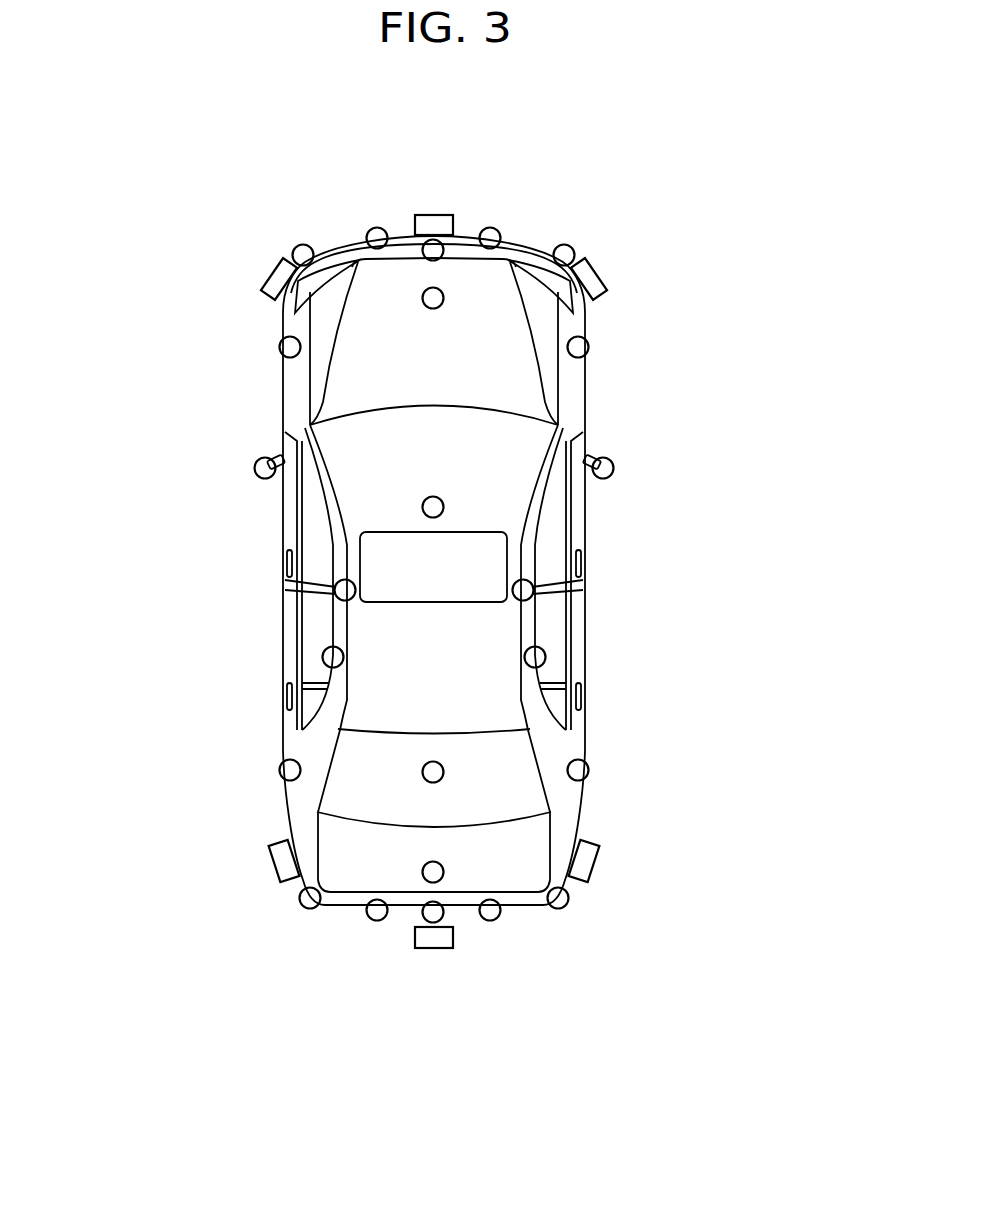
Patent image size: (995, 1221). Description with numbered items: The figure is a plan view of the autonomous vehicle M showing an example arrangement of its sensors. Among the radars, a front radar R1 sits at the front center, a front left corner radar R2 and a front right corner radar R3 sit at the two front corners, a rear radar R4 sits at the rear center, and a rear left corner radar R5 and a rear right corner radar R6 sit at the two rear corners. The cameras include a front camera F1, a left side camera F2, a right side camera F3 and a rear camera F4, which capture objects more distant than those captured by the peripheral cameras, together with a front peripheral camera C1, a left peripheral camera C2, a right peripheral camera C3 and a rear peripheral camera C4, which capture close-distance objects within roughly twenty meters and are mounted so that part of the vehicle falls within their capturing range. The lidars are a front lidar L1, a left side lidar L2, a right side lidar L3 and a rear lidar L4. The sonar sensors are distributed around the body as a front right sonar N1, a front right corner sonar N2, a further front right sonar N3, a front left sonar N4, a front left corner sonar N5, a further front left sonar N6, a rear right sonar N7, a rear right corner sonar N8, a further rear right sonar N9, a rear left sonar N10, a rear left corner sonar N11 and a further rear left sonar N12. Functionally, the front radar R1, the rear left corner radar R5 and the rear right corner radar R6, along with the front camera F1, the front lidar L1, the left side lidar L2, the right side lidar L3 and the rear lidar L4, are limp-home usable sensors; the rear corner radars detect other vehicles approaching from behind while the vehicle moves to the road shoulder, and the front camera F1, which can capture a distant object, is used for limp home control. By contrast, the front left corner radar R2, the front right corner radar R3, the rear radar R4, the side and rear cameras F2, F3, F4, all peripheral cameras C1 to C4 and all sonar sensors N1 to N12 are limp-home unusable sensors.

The autonomous vehicle M is at (283, 403).
The front radar R1 is at (428, 215).
The front peripheral camera C1 is at (447, 247).
The front left sonar N4 is at (370, 228).
The front right sonar N1 is at (528, 200).
The front left corner sonar N5 is at (295, 247).
The front right corner sonar N2 is at (573, 247).
The front left corner radar R2 is at (266, 287).
The front right corner radar R3 is at (602, 285).
The front left sonar N6 is at (279, 347).
The front right sonar N3 is at (589, 347).
The front lidar L1 is at (433, 309).
The front camera F1 is at (436, 497).
The left peripheral camera C2 is at (255, 469).
The right peripheral camera C3 is at (614, 469).
The left side lidar L2 is at (336, 597).
The right side lidar L3 is at (532, 597).
The left side camera F2 is at (323, 654).
The right side camera F3 is at (545, 654).
The rear camera F4 is at (443, 768).
The rear left sonar N12 is at (279, 770).
The rear right sonar N9 is at (589, 770).
The rear lidar L4 is at (441, 866).
The rear left corner radar R5 is at (270, 858).
The rear right corner radar R6 is at (598, 858).
The rear left corner sonar N11 is at (303, 907).
The rear right corner sonar N8 is at (564, 908).
The rear left sonar N10 is at (377, 921).
The rear peripheral camera C4 is at (425, 921).
The rear right sonar N7 is at (490, 921).
The rear radar R4 is at (438, 949).